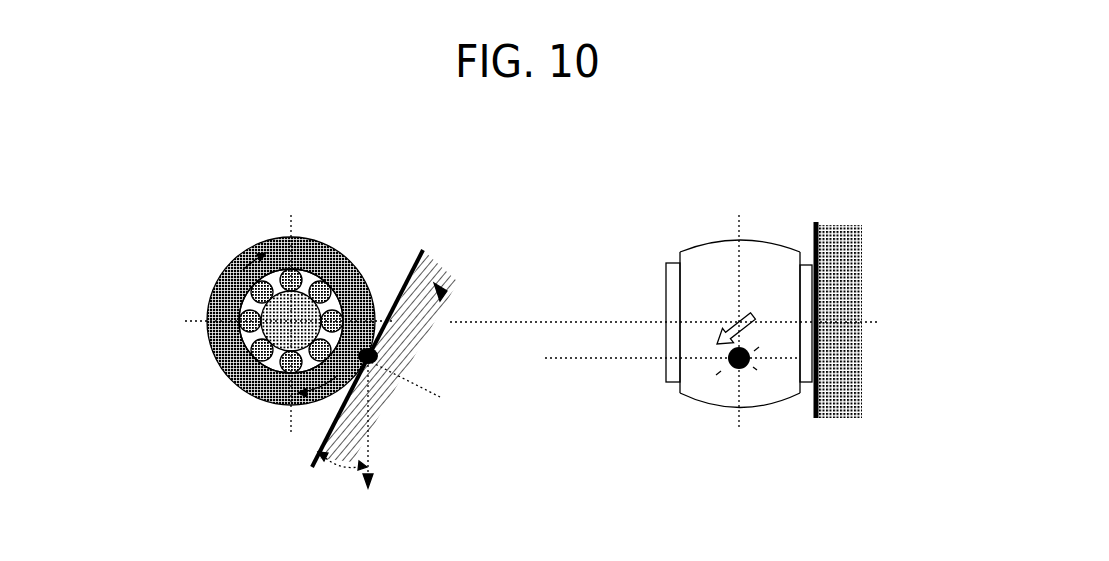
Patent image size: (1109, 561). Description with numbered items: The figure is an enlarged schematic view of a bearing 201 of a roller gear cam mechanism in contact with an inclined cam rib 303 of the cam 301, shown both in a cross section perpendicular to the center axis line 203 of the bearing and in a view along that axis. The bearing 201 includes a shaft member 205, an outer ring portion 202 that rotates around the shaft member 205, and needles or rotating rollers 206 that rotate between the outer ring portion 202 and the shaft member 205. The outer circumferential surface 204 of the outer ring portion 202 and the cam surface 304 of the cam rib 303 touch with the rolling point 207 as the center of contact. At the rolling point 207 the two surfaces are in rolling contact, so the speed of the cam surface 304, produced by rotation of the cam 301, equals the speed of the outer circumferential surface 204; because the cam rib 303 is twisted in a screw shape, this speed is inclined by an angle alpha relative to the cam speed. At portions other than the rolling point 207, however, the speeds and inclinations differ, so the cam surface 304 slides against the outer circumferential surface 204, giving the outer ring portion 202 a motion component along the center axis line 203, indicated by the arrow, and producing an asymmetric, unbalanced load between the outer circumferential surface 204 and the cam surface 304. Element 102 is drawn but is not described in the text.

The intermediate transfer belt 102 is at (838, 250).
The bearing 201 is at (318, 216).
The outer ring portion 202 is at (222, 350).
The center axis line 203 is at (290, 322).
The outer circumferential surface 204 is at (235, 262).
The shaft member 205 is at (275, 317).
The needles or rotating rollers 206 is at (250, 328).
The rolling point 207 is at (380, 357).
The cam 301 is at (448, 330).
The cam rib 303 is at (456, 282).
The cam surface 304 is at (424, 250).